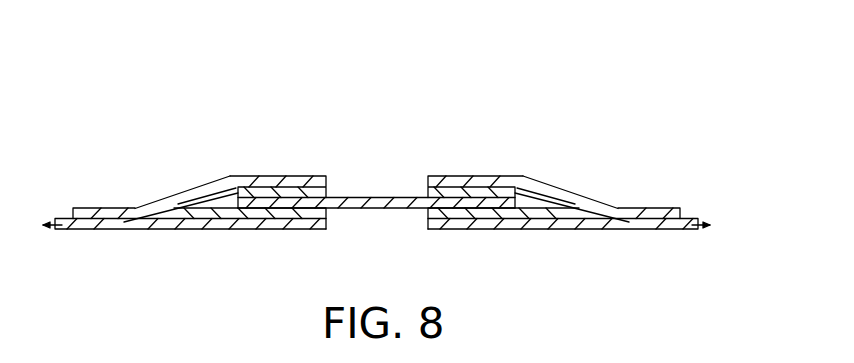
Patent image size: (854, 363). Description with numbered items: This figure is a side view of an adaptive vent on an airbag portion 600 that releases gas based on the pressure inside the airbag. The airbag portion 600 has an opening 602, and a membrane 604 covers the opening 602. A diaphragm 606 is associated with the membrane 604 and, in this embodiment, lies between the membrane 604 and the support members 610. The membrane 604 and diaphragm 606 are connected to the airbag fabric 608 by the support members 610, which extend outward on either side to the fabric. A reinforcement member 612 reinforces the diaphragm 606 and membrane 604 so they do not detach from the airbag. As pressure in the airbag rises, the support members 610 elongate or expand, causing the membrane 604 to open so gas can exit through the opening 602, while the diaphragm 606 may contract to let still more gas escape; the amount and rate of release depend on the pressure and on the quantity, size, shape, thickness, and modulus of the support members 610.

The airbag portion 600 is at (647, 107).
The opening 602 is at (368, 212).
The membrane 604 is at (373, 200).
The diaphragm 606 is at (284, 190).
The airbag fabric 608 is at (134, 229).
The support members 610 is at (200, 186).
The reinforcement member 612 is at (235, 214).